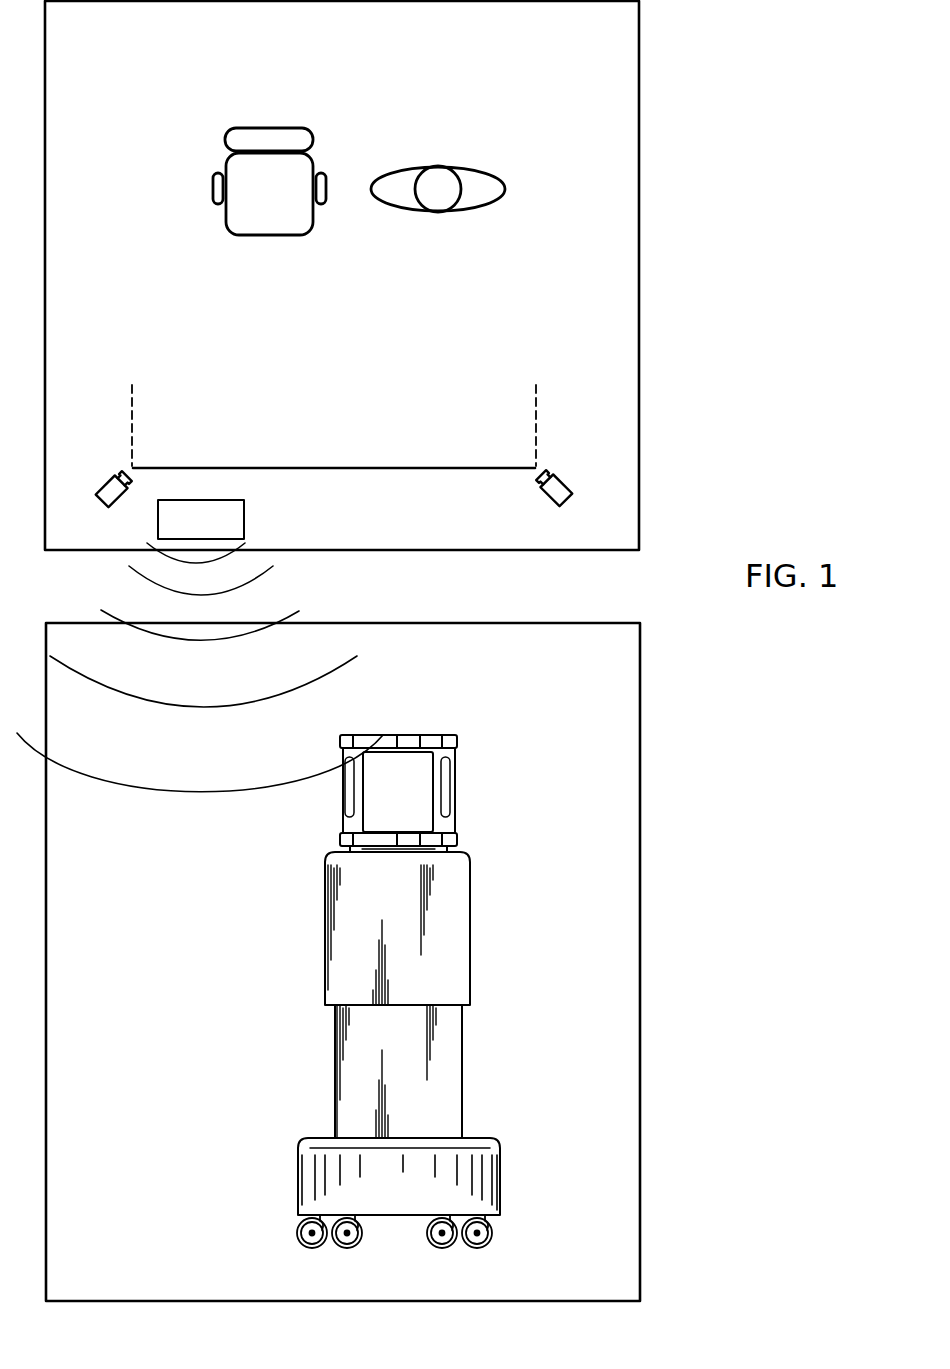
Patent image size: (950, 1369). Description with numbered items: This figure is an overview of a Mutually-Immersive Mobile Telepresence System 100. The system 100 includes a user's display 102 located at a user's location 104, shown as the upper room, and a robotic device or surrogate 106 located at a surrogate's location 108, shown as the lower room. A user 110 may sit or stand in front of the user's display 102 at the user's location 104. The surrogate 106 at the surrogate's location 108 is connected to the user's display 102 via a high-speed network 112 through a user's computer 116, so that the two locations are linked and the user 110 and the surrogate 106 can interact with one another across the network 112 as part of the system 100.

The Mutually-Immersive Mobile Telepresence System 100 is at (724, 1173).
The user's display 102 is at (378, 467).
The user's location 104 is at (590, 52).
The surrogate 106 is at (258, 997).
The surrogate's location 108 is at (601, 679).
The user 110 is at (447, 166).
The high-speed network 112 is at (330, 592).
The user's computer 116 is at (222, 532).